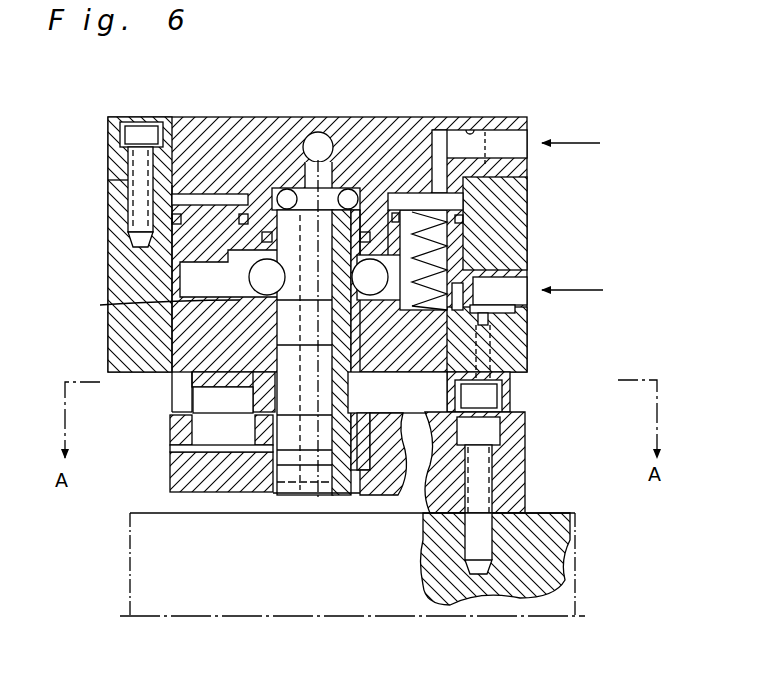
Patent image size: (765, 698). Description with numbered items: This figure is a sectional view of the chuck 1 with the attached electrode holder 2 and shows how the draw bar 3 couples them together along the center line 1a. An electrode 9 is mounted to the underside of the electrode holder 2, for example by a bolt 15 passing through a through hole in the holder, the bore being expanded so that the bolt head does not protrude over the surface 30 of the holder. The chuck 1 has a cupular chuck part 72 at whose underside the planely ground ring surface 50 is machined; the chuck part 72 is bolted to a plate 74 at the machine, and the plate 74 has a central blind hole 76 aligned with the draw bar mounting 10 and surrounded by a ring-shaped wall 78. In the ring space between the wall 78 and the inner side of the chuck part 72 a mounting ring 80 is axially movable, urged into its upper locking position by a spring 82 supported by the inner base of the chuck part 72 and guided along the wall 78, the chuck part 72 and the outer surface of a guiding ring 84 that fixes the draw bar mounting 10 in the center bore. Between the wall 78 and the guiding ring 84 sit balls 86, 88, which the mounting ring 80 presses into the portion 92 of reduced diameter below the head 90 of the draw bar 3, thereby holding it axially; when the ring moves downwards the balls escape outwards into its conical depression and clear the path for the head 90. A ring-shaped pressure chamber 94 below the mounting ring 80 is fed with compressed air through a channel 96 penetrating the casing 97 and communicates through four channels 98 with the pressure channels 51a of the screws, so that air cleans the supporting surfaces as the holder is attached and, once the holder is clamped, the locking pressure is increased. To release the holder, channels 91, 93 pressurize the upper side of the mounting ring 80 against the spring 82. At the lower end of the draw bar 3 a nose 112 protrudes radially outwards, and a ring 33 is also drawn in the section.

The chuck 1 is at (96, 253).
The center line 1a is at (318, 400).
The electrode holder 2 is at (160, 492).
The draw bar 3 is at (352, 396).
The electrode 9 is at (560, 558).
The draw bar mounting 10 is at (286, 379).
The bolt 15 is at (485, 463).
The surface 30 is at (440, 405).
The ring 33 is at (170, 448).
The ring surface 50 is at (135, 374).
The pressure channels 51a is at (480, 365).
The chuck part 72 is at (238, 338).
The plate 74 is at (108, 156).
The blind hole 76 is at (343, 187).
The ring-shaped wall 78 is at (375, 220).
The mounting ring 80 is at (200, 200).
The spring 82 is at (440, 258).
The guiding ring 84 is at (488, 345).
The ball 86 is at (447, 274).
The ball 88 is at (249, 272).
The head 90 is at (270, 192).
The channel 91 is at (441, 162).
The portion of reduced diameter 92 is at (100, 305).
The channel 93 is at (472, 132).
The pressure chamber 94 is at (483, 308).
The channel 96 is at (527, 283).
The casing 97 is at (527, 205).
The channels 98 is at (482, 325).
The nose 112 is at (363, 460).